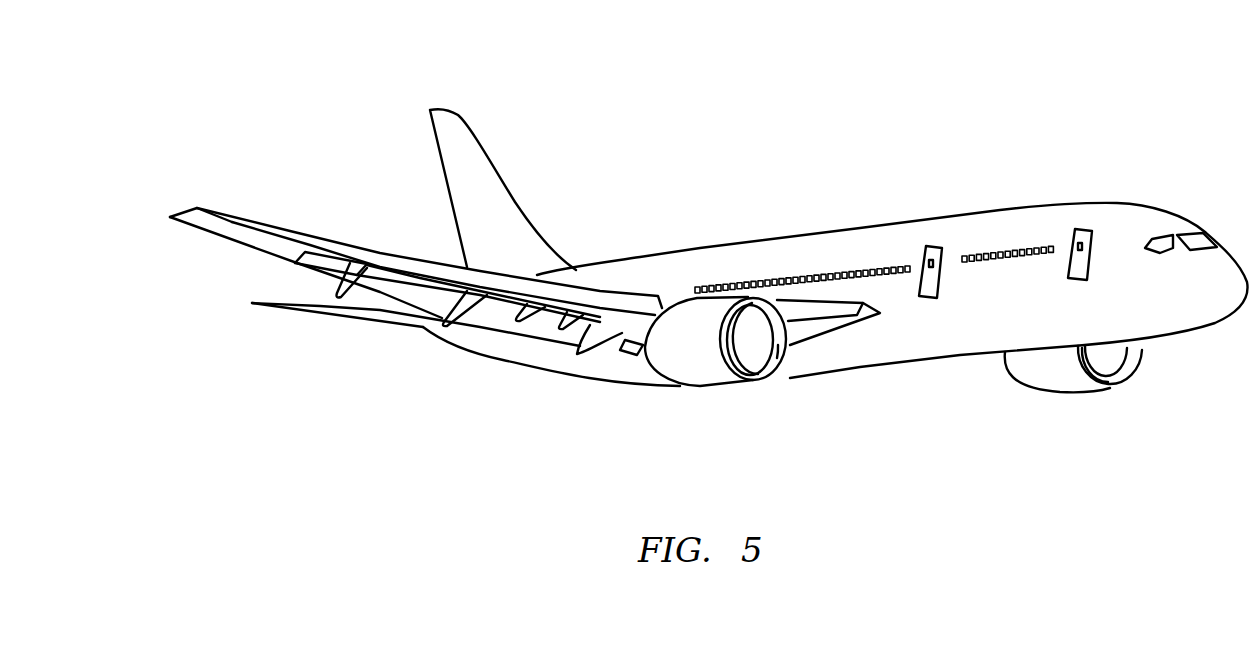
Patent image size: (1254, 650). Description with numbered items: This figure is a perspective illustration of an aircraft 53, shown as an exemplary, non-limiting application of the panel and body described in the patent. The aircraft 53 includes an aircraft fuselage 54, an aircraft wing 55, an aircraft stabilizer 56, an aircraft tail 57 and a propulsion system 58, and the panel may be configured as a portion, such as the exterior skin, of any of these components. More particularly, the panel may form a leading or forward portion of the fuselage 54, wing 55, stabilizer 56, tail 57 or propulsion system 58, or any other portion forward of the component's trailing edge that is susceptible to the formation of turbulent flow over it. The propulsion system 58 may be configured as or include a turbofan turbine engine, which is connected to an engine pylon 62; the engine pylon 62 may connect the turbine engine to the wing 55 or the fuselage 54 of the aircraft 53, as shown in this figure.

The aircraft 53 is at (1167, 125).
The aircraft fuselage 54 is at (1117, 201).
The aircraft wing 55 is at (584, 290).
The aircraft stabilizer 56 is at (378, 314).
The aircraft tail 57 is at (498, 190).
The propulsion system 58 is at (712, 372).
The engine pylon 62 is at (625, 322).